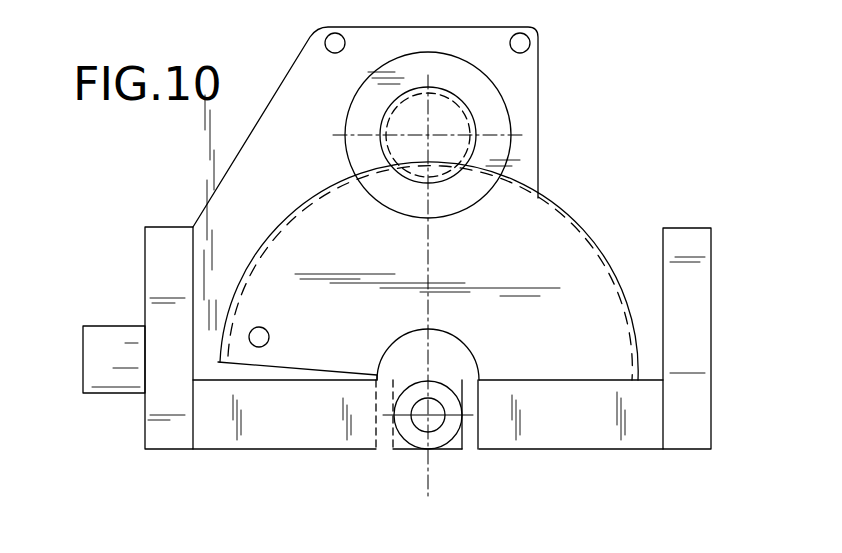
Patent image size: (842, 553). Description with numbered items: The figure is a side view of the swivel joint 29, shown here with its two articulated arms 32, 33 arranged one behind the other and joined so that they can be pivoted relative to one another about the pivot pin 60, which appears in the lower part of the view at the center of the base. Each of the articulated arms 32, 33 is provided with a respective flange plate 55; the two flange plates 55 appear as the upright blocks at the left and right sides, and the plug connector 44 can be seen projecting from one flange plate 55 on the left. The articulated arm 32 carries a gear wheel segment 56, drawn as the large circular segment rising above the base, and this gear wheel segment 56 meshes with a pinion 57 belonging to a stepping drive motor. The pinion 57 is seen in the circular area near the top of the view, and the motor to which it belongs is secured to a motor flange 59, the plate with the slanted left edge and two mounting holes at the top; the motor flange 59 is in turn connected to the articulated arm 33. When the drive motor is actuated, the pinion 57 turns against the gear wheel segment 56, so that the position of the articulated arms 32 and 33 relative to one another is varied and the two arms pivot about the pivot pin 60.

The swivel joint 29 is at (123, 445).
The articulated arm 32 is at (570, 438).
The articulated arm 33 is at (288, 432).
The plug connector 44 is at (93, 358).
The flange plate 55 is at (158, 261).
The gear wheel segment 56 is at (593, 313).
The pinion 57 is at (433, 135).
The motor flange 59 is at (528, 82).
The pivot pin 60 is at (428, 415).